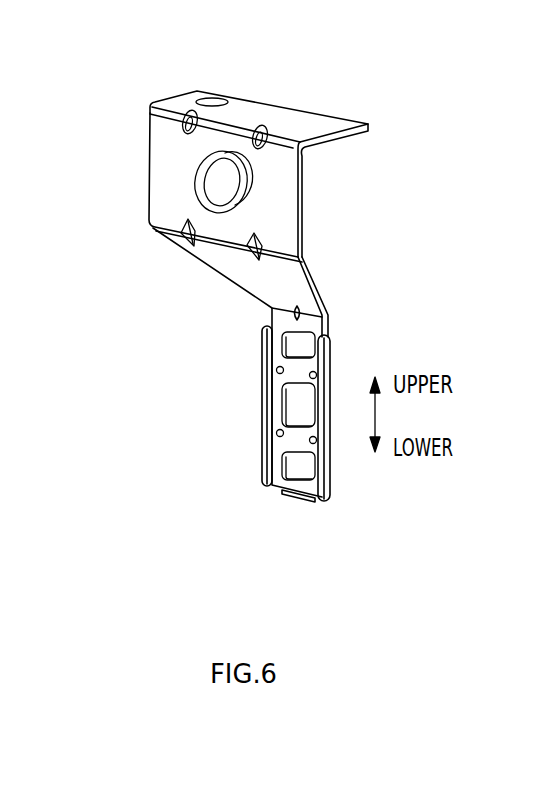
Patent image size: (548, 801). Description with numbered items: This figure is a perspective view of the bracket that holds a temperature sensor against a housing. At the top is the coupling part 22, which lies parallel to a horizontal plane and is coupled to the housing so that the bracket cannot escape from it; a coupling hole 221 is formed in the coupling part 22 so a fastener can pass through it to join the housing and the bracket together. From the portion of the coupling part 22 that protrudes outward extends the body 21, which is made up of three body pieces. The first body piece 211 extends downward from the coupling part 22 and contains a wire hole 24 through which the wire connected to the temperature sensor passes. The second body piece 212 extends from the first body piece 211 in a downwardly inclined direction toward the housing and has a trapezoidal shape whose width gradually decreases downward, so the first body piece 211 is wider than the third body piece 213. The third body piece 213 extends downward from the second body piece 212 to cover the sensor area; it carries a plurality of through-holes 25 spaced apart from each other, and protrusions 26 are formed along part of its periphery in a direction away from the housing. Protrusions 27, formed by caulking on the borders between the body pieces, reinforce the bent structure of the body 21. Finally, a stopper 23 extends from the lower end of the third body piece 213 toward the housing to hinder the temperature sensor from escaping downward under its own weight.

The body 21 is at (80, 290).
The first body piece 211 is at (153, 190).
The second body piece 212 is at (240, 275).
The third body piece 213 is at (216, 451).
The coupling part 22 is at (312, 120).
The coupling hole 221 is at (214, 98).
The stopper 23 is at (295, 498).
The wire hole 24 is at (236, 188).
The through-holes 25 is at (295, 413).
The protrusions 26 is at (322, 480).
The protrusions 27 is at (176, 188).